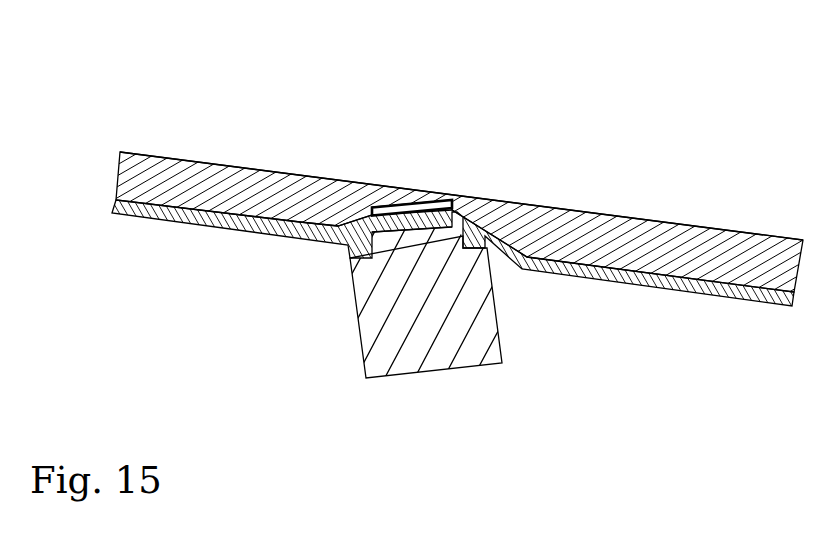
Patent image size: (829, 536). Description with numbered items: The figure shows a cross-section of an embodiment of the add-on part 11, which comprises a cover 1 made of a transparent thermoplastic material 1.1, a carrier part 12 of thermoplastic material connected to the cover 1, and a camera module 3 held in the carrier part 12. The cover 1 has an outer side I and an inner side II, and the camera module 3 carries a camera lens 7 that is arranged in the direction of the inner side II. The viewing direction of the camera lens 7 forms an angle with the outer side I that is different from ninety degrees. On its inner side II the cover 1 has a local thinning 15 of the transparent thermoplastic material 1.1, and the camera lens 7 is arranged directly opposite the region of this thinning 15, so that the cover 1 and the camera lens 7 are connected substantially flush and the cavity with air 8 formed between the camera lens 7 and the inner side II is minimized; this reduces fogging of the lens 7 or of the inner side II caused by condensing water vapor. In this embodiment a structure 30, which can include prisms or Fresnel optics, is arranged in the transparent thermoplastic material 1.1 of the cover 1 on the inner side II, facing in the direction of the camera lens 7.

The cover 1 is at (460, 161).
The transparent thermoplastic material 1.1 is at (170, 146).
The add-on part 11 is at (92, 98).
The carrier part 12 is at (416, 315).
The outer side I is at (213, 151).
The inner side II is at (260, 229).
The structure 30 is at (398, 191).
The local thinning 15 is at (453, 185).
The camera module 3 is at (447, 300).
The camera lens 7 is at (439, 231).
The cavity with air 8 is at (403, 233).